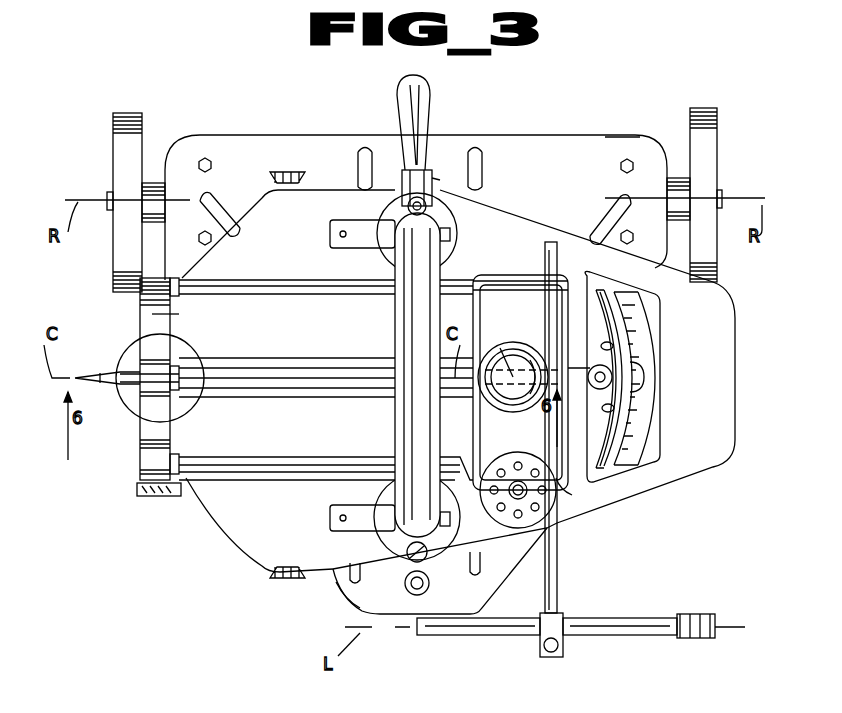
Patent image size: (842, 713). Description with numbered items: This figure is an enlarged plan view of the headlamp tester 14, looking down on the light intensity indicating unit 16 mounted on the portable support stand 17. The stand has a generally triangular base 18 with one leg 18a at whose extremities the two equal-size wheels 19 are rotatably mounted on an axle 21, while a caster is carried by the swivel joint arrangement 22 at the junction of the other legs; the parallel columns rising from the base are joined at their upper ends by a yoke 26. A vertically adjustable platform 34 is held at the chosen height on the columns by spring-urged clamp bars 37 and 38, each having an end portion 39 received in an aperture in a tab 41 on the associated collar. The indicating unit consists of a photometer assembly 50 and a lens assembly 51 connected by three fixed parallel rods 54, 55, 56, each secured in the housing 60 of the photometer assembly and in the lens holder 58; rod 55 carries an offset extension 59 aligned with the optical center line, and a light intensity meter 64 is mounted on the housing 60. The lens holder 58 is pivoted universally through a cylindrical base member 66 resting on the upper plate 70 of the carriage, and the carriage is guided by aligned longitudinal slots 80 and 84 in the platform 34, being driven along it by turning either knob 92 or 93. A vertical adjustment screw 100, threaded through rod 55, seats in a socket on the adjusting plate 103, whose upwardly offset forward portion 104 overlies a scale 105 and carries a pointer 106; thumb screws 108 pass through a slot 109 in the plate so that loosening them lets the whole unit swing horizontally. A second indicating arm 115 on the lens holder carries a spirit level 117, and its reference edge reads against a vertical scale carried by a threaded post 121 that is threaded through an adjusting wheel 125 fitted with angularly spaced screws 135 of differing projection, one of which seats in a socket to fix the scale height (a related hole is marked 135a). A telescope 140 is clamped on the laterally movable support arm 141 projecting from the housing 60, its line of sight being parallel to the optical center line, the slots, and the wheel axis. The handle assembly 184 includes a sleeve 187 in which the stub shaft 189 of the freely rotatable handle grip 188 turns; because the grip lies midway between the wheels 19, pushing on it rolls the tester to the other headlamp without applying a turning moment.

The tester 14 is at (608, 128).
The light intensity indicating unit 16 is at (132, 460).
The portable support stand 17 is at (340, 591).
The triangular base 18 is at (472, 591).
The leg 18a is at (318, 142).
The wheels 19 is at (125, 141).
The axle 21 is at (107, 200).
The swivel joint arrangement 22 is at (408, 590).
The yoke 26 is at (410, 314).
The vertically adjustable platform 34 is at (718, 356).
The clamp bar 37 is at (330, 522).
The clamp bar 38 is at (330, 236).
The end portion 39 is at (450, 236).
The tab 41 is at (452, 232).
The photometer assembly 50 is at (517, 270).
The lens assembly 51 is at (178, 318).
The rod 54 is at (278, 288).
The rod 55 is at (342, 375).
The rod 56 is at (330, 465).
The lens holder 58 is at (153, 352).
The offset extension 59 is at (100, 372).
The housing 60 is at (512, 323).
The light intensity meter 64 is at (503, 395).
The cylindrical base member 66 is at (182, 394).
The upper plate 70 is at (296, 364).
The slot 80 is at (240, 378).
The second slot 84 is at (508, 370).
The knob 92 is at (288, 170).
The knob 93 is at (280, 567).
The vertical adjustment screw 100 is at (595, 370).
The adjusting plate 103 is at (612, 292).
The upwardly offset forward portion 104 is at (622, 315).
The scale 105 is at (643, 333).
The pointer 106 is at (640, 368).
The thumb screws 108 is at (604, 352).
The slot 109 is at (604, 438).
The second indicating arm 115 is at (330, 477).
The spirit level 117 is at (160, 499).
The threaded post 121 is at (525, 470).
The adjusting wheel 125 is at (509, 500).
The screws 135 is at (497, 480).
The hole 135a is at (563, 480).
The telescope 140 is at (612, 622).
The laterally movable support arm 141 is at (553, 576).
The handle assembly 184 is at (440, 176).
The sleeve 187 is at (410, 180).
The handle grip 188 is at (415, 100).
The stub shaft 189 is at (412, 208).